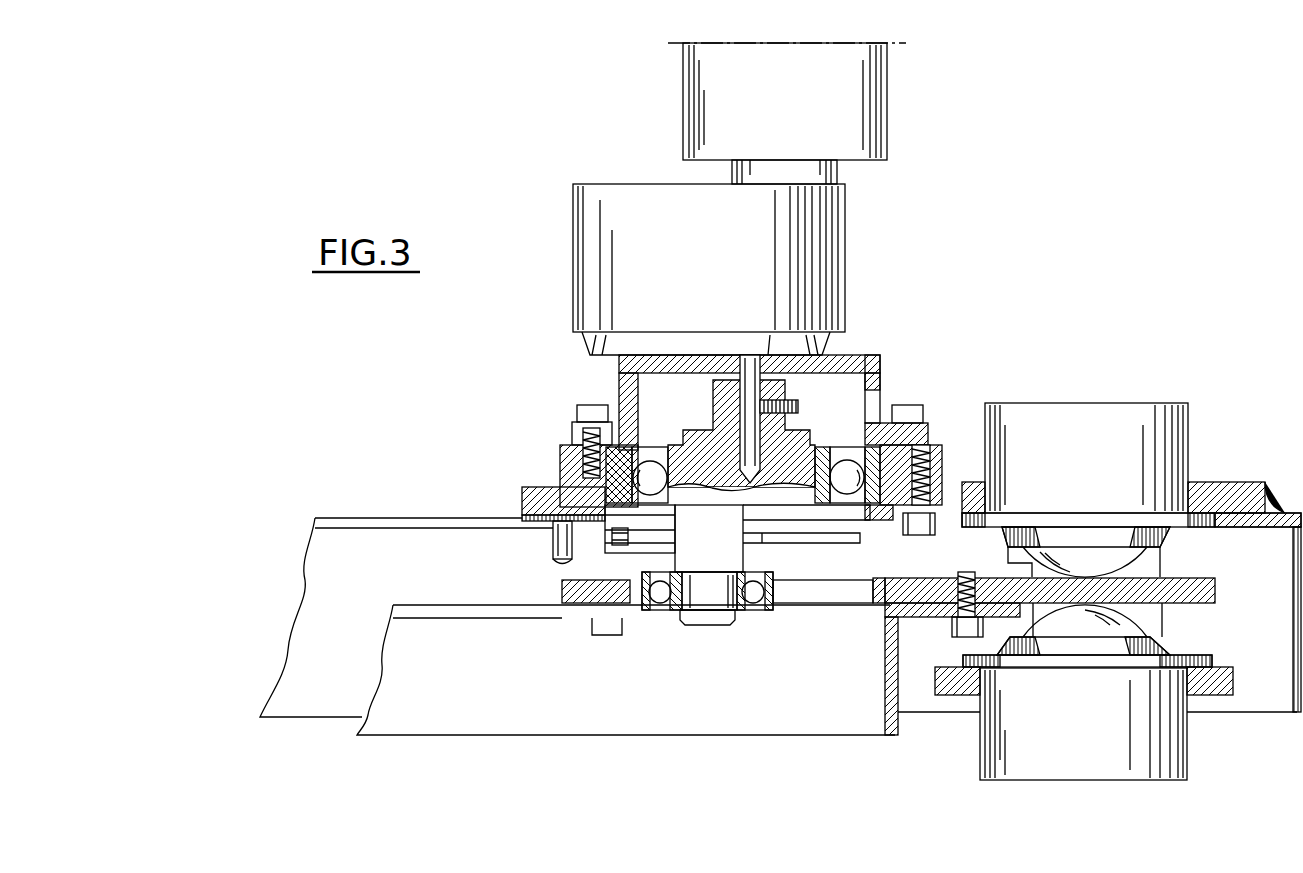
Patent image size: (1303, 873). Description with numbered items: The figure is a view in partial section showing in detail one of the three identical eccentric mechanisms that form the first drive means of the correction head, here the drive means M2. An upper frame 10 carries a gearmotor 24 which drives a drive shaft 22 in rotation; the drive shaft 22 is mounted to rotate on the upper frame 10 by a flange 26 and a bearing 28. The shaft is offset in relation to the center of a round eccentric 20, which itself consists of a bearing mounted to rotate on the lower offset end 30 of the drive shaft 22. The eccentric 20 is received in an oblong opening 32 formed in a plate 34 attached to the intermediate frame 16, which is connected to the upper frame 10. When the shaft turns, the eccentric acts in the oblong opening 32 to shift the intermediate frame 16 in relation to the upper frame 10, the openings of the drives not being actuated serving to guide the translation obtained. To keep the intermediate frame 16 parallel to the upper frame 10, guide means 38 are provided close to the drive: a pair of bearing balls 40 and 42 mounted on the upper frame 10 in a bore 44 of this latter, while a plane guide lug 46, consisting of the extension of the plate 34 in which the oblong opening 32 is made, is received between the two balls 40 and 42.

The upper frame 10 is at (370, 522).
The intermediate frame 16 is at (435, 610).
The round eccentric 20 is at (656, 612).
The drive shaft 22 is at (724, 408).
The gearmotor 24 is at (828, 270).
The flange 26 is at (940, 447).
The bearing 28 is at (850, 460).
The lower offset end 30 is at (718, 612).
The oblong opening 32 is at (870, 582).
The plate 34 is at (578, 604).
The guide means 38 is at (1198, 398).
The bearing ball 40 is at (1125, 553).
The bearing ball 42 is at (1140, 623).
The bore 44 is at (1175, 468).
The plane guide lug 46 is at (1215, 590).
The drive means M2 is at (895, 380).